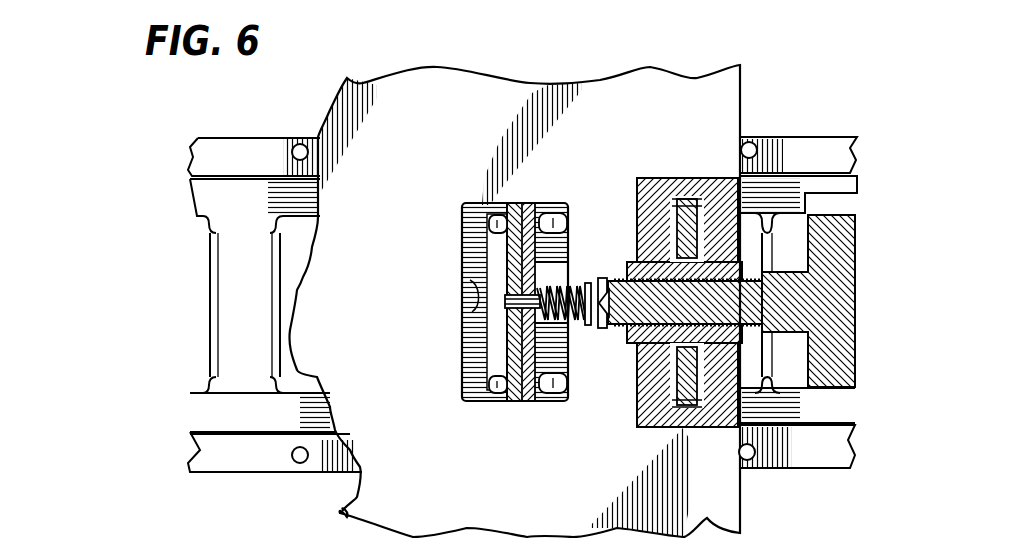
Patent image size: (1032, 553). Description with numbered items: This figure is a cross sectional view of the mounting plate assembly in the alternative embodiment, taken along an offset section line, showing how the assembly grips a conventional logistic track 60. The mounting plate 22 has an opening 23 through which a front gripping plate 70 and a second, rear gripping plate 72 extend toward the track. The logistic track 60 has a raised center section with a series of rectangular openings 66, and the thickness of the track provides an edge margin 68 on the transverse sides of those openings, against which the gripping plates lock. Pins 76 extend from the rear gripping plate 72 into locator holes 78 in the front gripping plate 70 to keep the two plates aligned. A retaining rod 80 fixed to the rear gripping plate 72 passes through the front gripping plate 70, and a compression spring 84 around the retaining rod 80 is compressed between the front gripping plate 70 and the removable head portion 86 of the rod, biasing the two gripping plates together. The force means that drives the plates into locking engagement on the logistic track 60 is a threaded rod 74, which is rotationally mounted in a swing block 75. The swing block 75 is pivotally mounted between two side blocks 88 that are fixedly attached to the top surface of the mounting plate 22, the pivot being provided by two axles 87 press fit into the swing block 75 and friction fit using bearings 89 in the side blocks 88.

The mounting plate 22 is at (428, 479).
The opening 23 is at (470, 308).
The logistic track 60 is at (858, 180).
The rectangular openings 66 is at (292, 262).
The edge margin 68 is at (282, 257).
The front gripping plate 70 is at (555, 256).
The second gripping plate 72 is at (507, 343).
The threaded rod 74 is at (808, 256).
The swing block 75 is at (608, 330).
The pins 76 is at (463, 222).
The locator holes 78 is at (560, 213).
The retaining rod 80 is at (586, 325).
The compression spring 84 is at (582, 285).
The removable head portion 86 is at (600, 283).
The axles 87 is at (745, 178).
The side blocks 88 is at (653, 178).
The bearings 89 is at (715, 180).